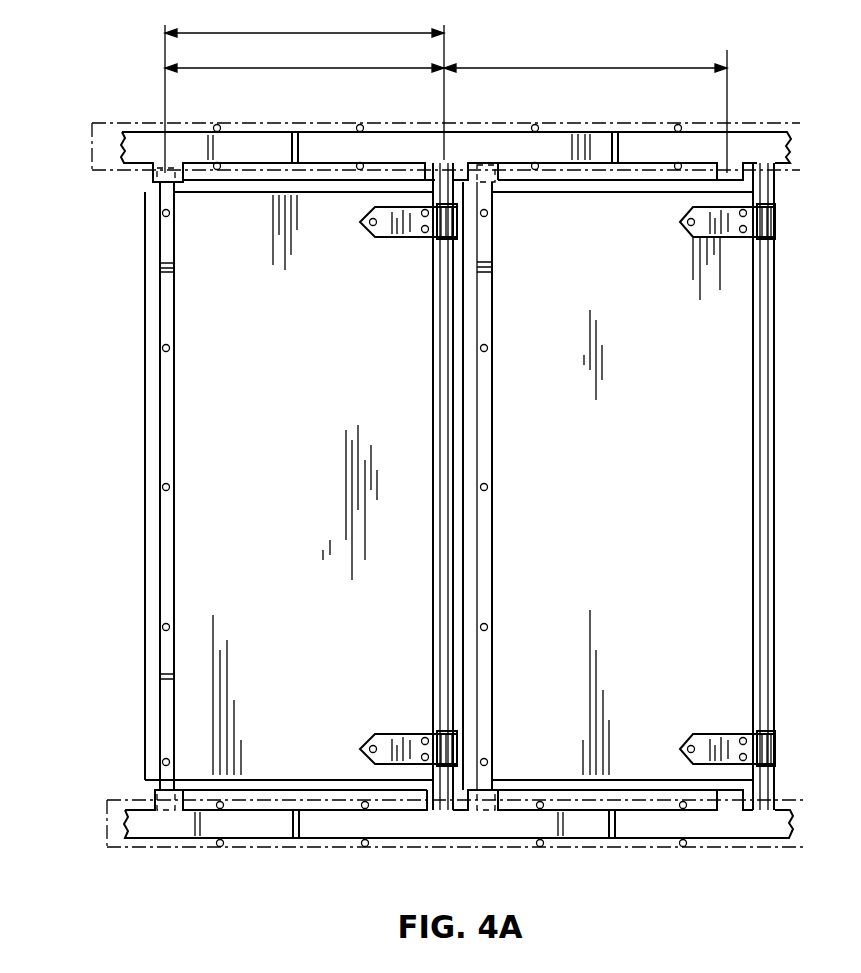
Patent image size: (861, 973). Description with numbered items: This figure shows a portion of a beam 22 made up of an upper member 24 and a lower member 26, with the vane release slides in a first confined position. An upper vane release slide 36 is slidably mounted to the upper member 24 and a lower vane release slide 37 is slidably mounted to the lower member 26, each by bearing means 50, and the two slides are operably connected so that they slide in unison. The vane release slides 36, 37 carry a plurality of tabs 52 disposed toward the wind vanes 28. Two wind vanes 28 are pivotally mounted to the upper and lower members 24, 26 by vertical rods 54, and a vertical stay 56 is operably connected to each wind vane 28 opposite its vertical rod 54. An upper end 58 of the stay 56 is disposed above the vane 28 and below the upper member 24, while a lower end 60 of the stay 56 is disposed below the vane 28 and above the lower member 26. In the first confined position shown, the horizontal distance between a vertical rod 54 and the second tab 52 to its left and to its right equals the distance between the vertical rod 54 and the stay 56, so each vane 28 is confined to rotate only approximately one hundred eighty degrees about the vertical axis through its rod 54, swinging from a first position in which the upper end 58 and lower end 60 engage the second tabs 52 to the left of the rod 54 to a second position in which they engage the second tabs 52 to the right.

The beam 22 is at (157, 102).
The upper member 24 is at (326, 128).
The lower member 26 is at (627, 847).
The wind vane 28 is at (622, 210).
The upper vane release slide 36 is at (142, 140).
The lower vane release slide 37 is at (137, 825).
The bearing means 50 is at (615, 134).
The tab 52 is at (150, 192).
The vertical rod 54 is at (445, 470).
The vertical stay 56 is at (488, 330).
The upper end 58 is at (490, 180).
The lower end 60 is at (167, 800).